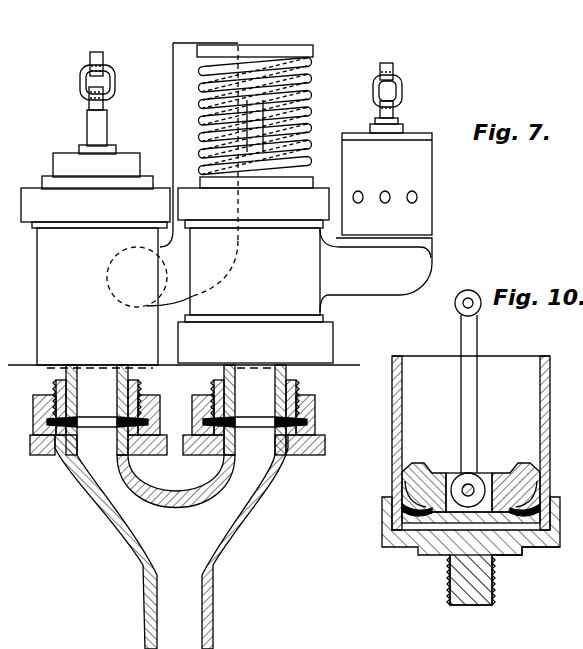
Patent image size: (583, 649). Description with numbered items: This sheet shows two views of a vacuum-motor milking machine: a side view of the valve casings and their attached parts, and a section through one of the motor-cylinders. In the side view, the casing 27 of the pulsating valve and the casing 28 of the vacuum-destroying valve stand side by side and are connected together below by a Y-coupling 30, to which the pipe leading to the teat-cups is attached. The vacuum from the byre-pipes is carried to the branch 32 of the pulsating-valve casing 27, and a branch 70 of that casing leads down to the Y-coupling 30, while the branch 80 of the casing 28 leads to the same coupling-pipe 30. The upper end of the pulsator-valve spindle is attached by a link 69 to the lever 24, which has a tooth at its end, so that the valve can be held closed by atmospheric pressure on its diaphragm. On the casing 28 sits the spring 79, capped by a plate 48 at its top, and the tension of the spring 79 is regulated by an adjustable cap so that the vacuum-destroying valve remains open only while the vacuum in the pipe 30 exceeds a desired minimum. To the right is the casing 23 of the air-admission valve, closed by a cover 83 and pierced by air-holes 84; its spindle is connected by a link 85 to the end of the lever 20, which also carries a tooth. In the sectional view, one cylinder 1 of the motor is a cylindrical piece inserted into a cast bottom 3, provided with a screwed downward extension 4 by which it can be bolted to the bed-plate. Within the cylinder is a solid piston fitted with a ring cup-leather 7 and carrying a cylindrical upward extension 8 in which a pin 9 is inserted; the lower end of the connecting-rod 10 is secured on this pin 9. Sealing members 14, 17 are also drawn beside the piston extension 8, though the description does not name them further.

In FIG. 7, the lever 24 is at (96, 58).
In FIG. 7, the link 69 is at (82, 84).
In FIG. 7, the branch 32 is at (179, 104).
In FIG. 7, the top plate 48 is at (281, 47).
In FIG. 7, the spring 79 is at (299, 121).
In FIG. 7, the casing 27 is at (95, 237).
In FIG. 7, the casing 28 is at (305, 275).
In FIG. 7, the casing 23 is at (410, 217).
In FIG. 7, the air-holes 84 is at (418, 197).
In FIG. 7, the cover 83 is at (408, 137).
In FIG. 7, the link 85 is at (401, 92).
In FIG. 7, the lever 20 is at (393, 66).
In FIG. 7, the branch 70 is at (98, 410).
In FIG. 7, the branch 80 is at (254, 410).
In FIG. 7, the Y-coupling 30 is at (171, 542).
In FIG. 10, the cylinder 1 is at (471, 443).
In FIG. 10, the connecting-rod 10 is at (466, 383).
In FIG. 10, the cylindrical upward extension 8 is at (487, 472).
In FIG. 10, the pin 9 is at (463, 484).
In FIG. 10, the left wedge 17 is at (402, 470).
In FIG. 10, the right wedge 14 is at (547, 464).
In FIG. 10, the ring cup-leather 7 is at (398, 521).
In FIG. 10, the cast bottom 3 is at (507, 553).
In FIG. 10, the screwed downward extension 4 is at (453, 582).